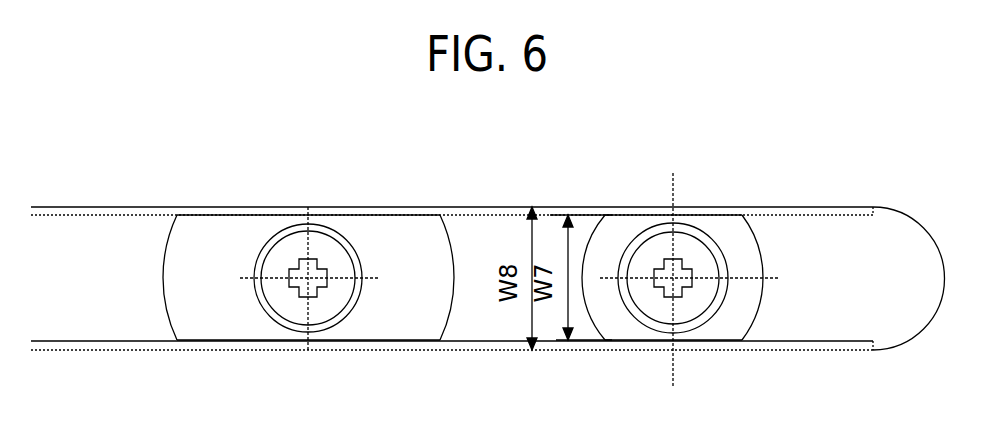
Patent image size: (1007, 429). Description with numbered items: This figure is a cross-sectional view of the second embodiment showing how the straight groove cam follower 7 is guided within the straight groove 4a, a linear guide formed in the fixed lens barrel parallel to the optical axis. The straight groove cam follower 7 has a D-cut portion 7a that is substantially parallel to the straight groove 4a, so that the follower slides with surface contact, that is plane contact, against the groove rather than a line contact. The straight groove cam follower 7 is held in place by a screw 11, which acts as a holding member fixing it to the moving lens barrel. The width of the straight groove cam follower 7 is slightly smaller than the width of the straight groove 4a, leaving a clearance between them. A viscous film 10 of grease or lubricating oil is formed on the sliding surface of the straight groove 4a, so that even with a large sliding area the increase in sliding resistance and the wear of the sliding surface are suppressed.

The viscous film 10 is at (51, 206).
The straight groove 4a is at (84, 213).
The straight groove cam follower 7 is at (693, 289).
The D-cut portion 7a is at (613, 214).
The screw 11 is at (699, 254).